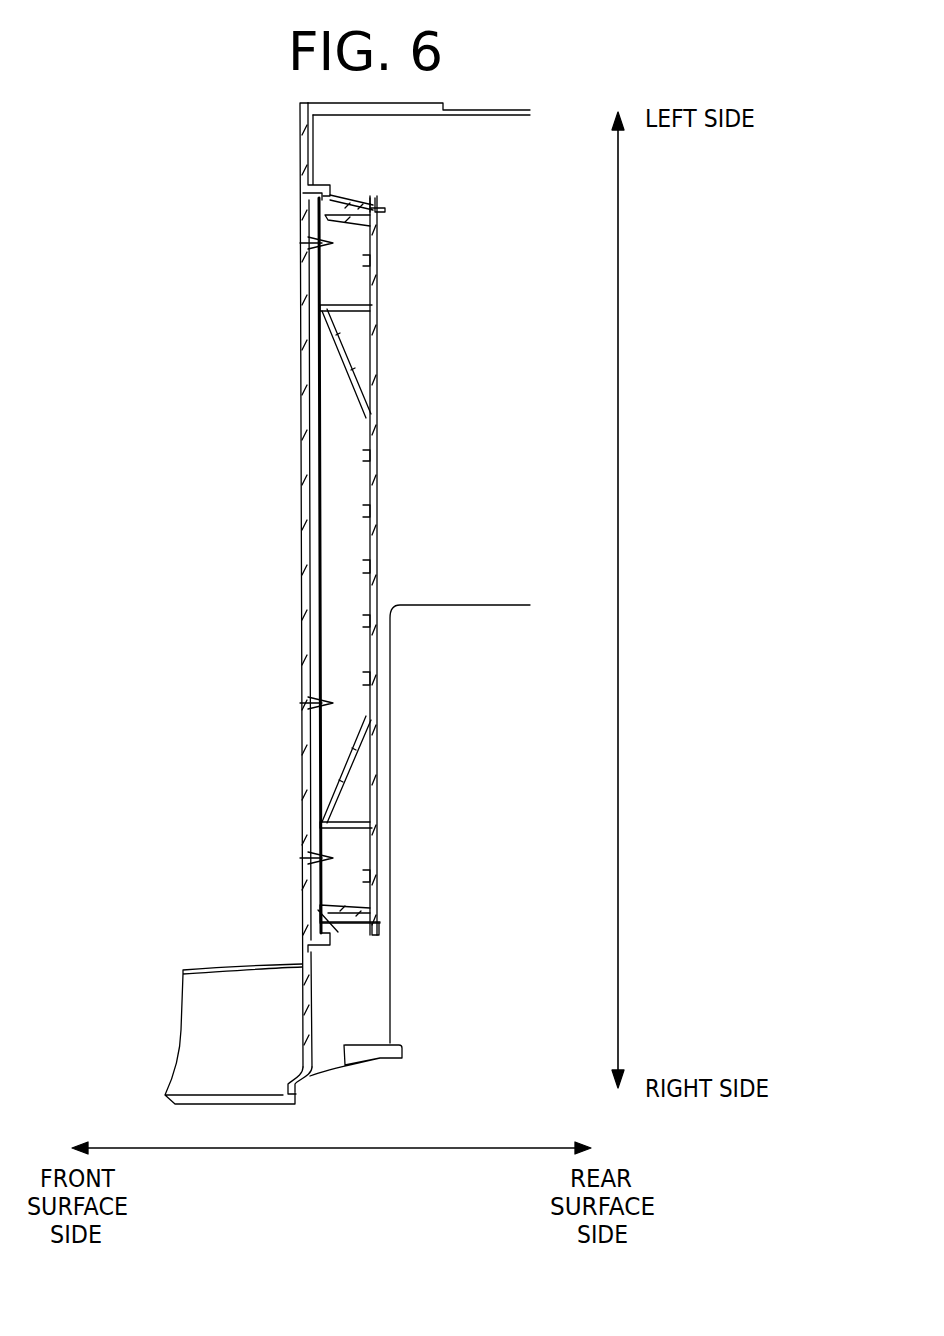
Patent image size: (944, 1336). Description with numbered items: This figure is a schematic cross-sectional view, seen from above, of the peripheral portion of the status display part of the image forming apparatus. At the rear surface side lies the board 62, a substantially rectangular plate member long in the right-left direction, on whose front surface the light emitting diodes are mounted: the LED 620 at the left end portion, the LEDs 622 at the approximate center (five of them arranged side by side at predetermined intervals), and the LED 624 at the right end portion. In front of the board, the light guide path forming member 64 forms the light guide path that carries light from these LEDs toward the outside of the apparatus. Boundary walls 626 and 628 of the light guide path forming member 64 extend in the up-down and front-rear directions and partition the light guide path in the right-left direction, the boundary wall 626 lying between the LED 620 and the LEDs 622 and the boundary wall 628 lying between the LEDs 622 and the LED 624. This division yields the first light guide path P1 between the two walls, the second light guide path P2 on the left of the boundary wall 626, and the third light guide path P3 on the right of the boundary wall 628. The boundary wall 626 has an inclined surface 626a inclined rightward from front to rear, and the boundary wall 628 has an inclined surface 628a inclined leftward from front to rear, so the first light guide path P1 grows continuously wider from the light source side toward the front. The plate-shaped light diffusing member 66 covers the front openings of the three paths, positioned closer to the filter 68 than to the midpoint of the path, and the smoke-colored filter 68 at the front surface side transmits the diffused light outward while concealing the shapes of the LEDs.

The board 62 is at (380, 768).
The light guide path forming member 64 is at (345, 923).
The light diffusing member 66 is at (320, 452).
The filter 68 is at (300, 397).
The LED 620 is at (363, 260).
The LEDs 622 is at (367, 455).
The LED 624 is at (363, 875).
The boundary wall 626 is at (391, 324).
The inclined surface 626a is at (347, 373).
The boundary wall 628 is at (400, 797).
The inclined surface 628a is at (378, 792).
The first light guide path P1 is at (308, 703).
The second light guide path P2 is at (308, 243).
The third light guide path P3 is at (308, 858).